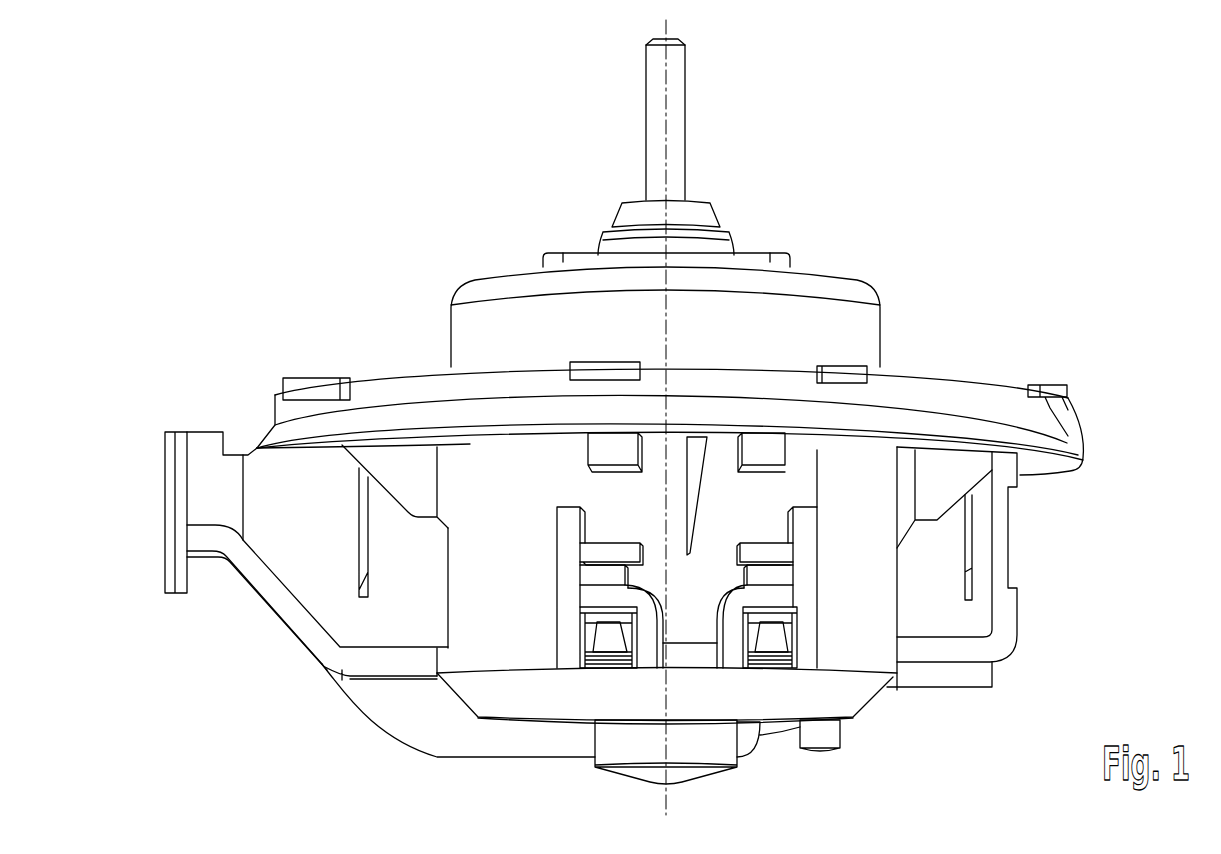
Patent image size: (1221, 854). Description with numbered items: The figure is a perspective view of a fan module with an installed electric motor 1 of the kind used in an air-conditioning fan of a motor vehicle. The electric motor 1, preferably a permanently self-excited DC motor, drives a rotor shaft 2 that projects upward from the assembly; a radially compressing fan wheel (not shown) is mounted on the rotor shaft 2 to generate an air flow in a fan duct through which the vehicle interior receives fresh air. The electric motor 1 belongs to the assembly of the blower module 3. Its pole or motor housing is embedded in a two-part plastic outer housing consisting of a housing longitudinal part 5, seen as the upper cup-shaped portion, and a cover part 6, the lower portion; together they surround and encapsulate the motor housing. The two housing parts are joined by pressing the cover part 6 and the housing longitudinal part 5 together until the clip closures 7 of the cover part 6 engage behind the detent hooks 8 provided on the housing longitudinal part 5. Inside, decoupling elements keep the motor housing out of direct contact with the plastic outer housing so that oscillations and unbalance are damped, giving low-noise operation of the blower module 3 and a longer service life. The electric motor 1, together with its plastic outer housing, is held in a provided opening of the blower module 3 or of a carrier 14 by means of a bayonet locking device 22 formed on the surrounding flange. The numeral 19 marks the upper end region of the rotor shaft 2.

The electric motor 1 is at (330, 228).
The rotor shaft 2 is at (676, 98).
The shaft end 19 is at (656, 75).
The housing longitudinal part 5 is at (852, 287).
The bayonet locking device 22 is at (848, 372).
The blower module 3 is at (260, 473).
The carrier 14 is at (260, 473).
The clip closures 7 is at (613, 595).
The detent hooks 8 is at (603, 635).
The cover part 6 is at (1007, 618).